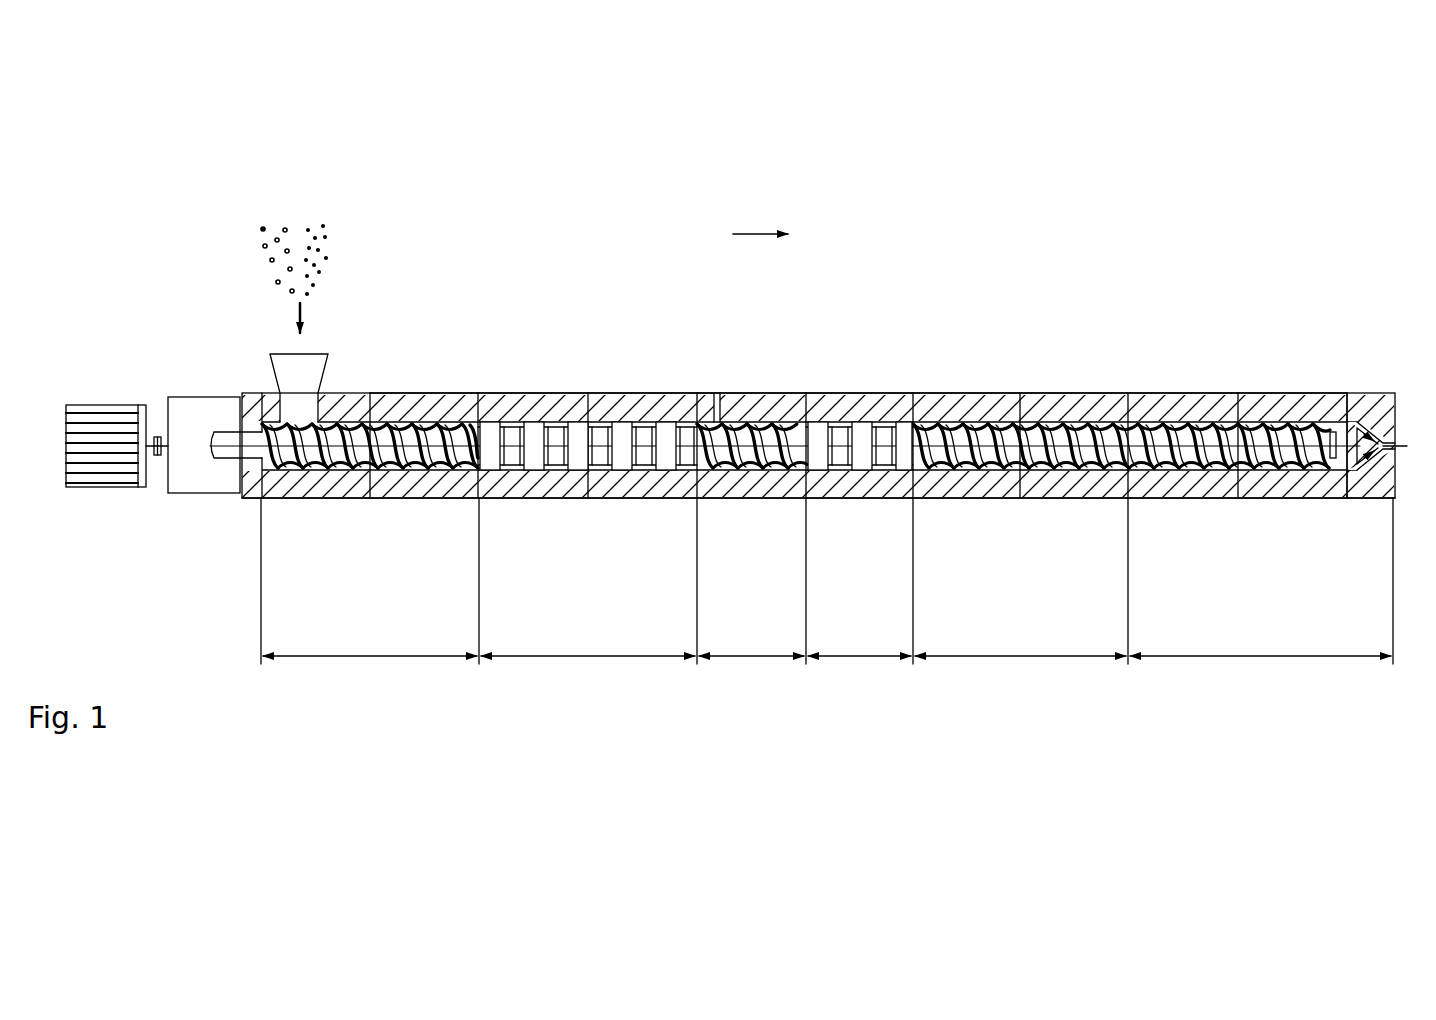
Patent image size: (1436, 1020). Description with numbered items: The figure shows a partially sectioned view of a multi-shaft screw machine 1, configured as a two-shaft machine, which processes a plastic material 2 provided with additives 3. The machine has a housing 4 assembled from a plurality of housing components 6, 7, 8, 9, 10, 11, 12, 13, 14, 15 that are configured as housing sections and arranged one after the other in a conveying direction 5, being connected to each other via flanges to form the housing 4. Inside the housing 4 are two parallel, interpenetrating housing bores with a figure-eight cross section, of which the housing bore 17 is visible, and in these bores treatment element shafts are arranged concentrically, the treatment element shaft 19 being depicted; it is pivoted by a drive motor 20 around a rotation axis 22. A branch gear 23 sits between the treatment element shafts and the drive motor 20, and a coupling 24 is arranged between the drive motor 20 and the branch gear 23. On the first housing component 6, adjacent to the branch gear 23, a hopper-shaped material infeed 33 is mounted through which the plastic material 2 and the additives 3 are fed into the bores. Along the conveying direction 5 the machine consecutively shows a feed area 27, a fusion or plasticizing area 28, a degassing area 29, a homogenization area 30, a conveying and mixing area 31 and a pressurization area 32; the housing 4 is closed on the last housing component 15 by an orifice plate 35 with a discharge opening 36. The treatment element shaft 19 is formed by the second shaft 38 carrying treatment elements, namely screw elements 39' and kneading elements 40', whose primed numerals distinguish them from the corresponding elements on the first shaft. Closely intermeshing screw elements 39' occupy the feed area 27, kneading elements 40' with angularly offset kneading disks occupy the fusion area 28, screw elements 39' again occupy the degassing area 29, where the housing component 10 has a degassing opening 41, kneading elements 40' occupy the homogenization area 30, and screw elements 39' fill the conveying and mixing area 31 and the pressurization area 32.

The multi-shaft screw machine 1 is at (686, 212).
The plastic material 2 is at (264, 228).
The additives 3 is at (323, 225).
The housing 4 is at (576, 391).
The conveying direction 5 is at (760, 233).
The first housing component 6 is at (331, 500).
The housing component 7 is at (460, 391).
The housing component 8 is at (518, 391).
The housing component 9 is at (632, 391).
The housing component 10 is at (784, 391).
The housing component 11 is at (850, 391).
The housing component 12 is at (1000, 391).
The housing component 13 is at (1088, 391).
The housing component 14 is at (1190, 391).
The last housing component 15 is at (1270, 391).
The housing bore 17 is at (785, 439).
The treatment element shaft 19 is at (955, 418).
The drive motor 20 is at (92, 405).
The rotation axis 22 is at (1094, 470).
The branch gear 23 is at (197, 410).
The coupling 24 is at (156, 440).
The feed area 27 is at (369, 581).
The fusion area 28 is at (587, 581).
The degassing area 29 is at (750, 581).
The homogenization area 30 is at (858, 581).
The conveying and mixing area 31 is at (1019, 581).
The pressurization area 32 is at (1260, 581).
The material infeed 33 is at (312, 362).
The orifice plate 35 is at (1383, 400).
The discharge opening 36 is at (1407, 446).
The second shaft 38 is at (206, 458).
The screw elements 39' is at (796, 439).
The kneading elements 40' is at (695, 505).
The degassing opening 41 is at (717, 420).